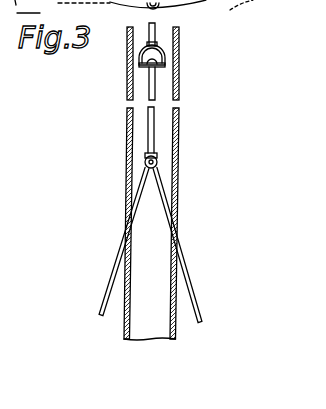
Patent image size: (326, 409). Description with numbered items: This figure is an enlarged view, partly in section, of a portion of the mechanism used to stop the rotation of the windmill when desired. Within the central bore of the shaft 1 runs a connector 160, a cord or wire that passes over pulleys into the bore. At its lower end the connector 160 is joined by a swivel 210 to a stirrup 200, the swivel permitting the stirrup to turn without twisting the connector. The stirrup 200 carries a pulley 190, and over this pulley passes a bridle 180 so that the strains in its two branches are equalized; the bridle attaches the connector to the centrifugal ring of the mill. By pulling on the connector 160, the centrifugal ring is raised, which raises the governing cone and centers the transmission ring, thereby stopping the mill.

The shaft 1 is at (197, 130).
The connector 160 is at (153, 24).
The bridle 180 is at (88, 226).
The pulley 190 is at (156, 164).
The stirrup 200 is at (155, 85).
The swivel 210 is at (147, 57).